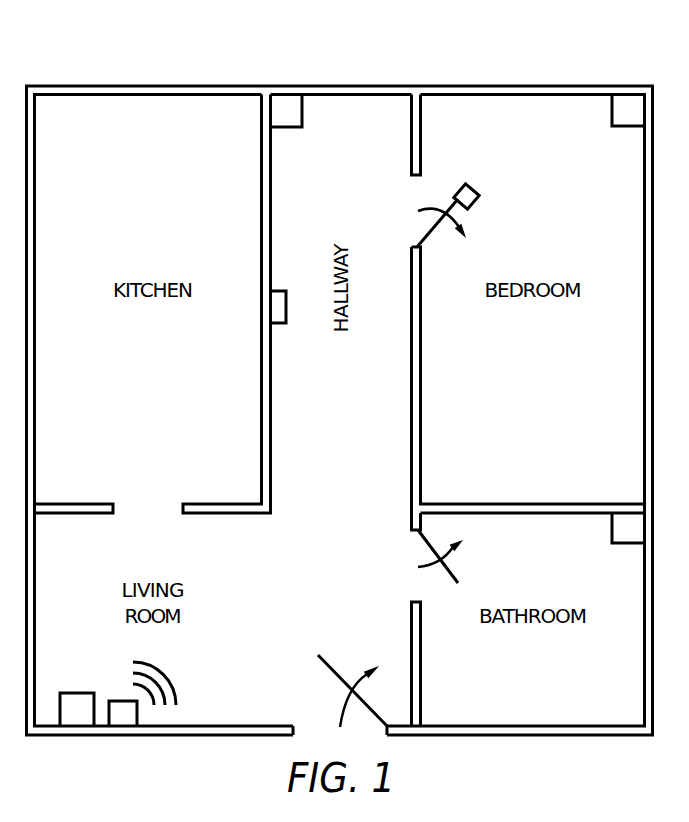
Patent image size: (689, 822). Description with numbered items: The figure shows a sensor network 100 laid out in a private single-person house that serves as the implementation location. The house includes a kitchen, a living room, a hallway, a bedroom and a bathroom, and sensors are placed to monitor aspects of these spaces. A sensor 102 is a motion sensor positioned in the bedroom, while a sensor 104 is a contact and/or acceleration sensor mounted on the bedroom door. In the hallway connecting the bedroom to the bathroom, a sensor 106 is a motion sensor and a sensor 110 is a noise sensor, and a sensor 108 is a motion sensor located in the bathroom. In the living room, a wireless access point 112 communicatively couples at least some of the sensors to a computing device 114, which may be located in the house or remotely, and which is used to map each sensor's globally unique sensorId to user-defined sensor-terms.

The sensor network 100 is at (163, 31).
The sensor 102 is at (612, 118).
The sensor 104 is at (478, 201).
The sensor 106 is at (302, 128).
The sensor 108 is at (613, 530).
The sensor 110 is at (280, 323).
The wireless access point 112 is at (137, 715).
The computing device 114 is at (77, 693).